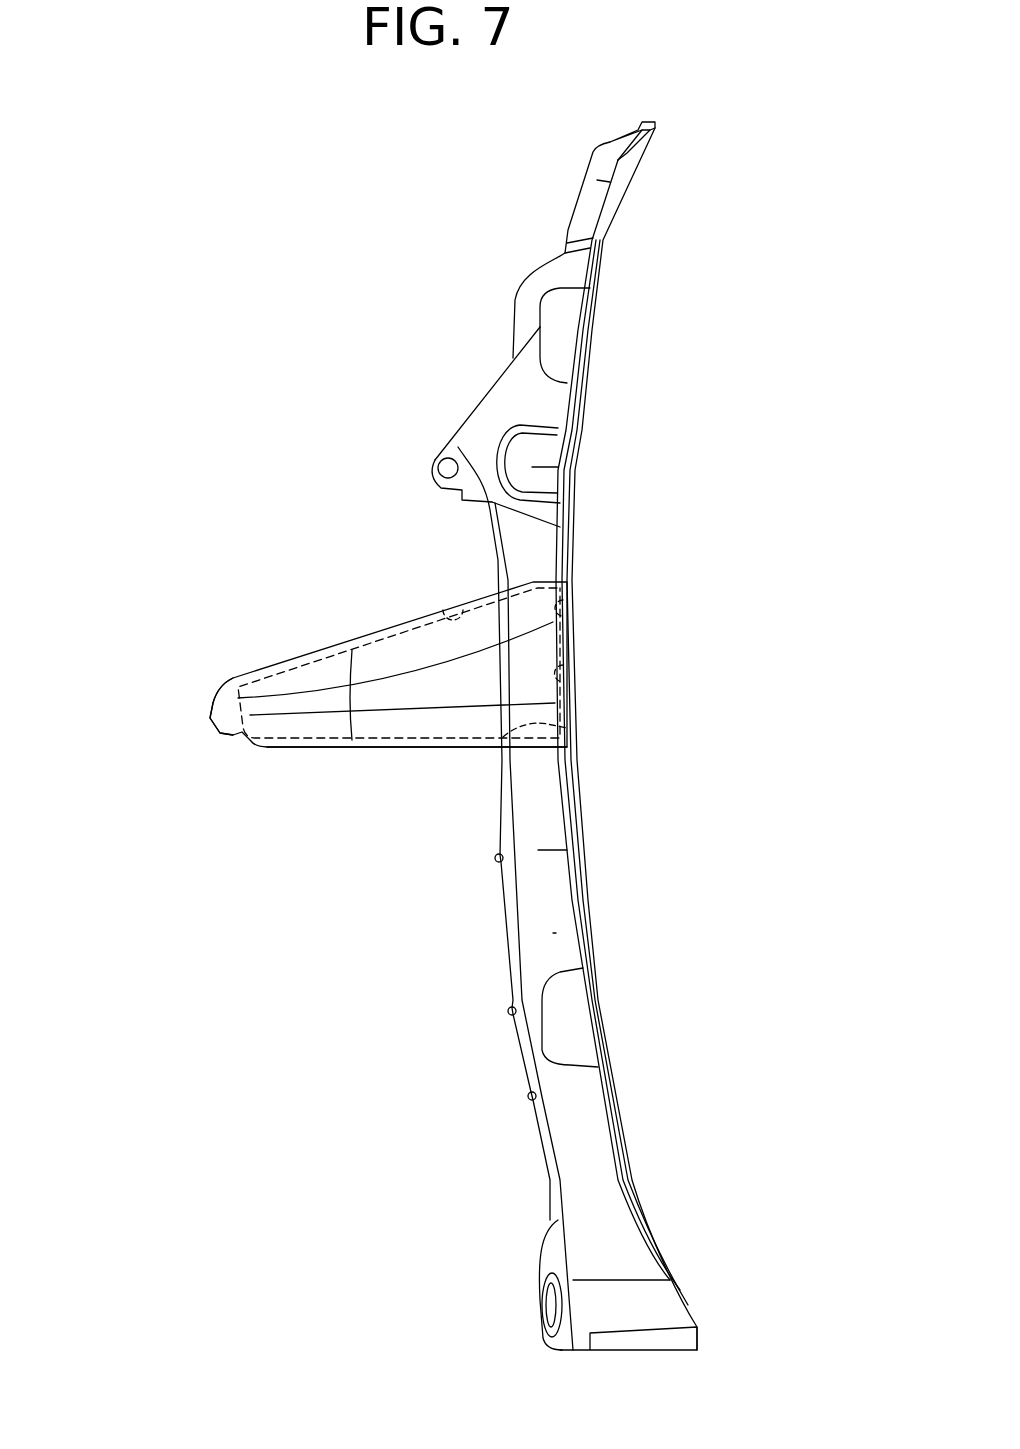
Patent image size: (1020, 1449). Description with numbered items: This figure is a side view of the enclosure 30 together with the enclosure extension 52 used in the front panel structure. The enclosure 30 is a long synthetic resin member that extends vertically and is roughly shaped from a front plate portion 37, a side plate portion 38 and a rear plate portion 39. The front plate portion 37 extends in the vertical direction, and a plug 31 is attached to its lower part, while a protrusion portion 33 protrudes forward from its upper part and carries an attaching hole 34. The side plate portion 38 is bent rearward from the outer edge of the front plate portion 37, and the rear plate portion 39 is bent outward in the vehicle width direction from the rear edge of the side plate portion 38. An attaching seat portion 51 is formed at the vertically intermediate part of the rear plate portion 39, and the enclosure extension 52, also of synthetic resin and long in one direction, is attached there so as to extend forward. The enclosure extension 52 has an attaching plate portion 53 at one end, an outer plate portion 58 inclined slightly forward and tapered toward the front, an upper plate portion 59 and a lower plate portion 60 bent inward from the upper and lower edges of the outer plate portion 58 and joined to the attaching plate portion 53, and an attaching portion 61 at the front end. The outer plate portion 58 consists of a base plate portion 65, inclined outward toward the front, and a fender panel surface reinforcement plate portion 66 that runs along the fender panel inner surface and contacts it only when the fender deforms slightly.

The enclosure 30 is at (585, 408).
The plug 31 is at (545, 1303).
The protrusion portion 33 is at (440, 455).
The attaching hole 34 is at (438, 468).
The front plate portion 37 is at (503, 953).
The side plate portion 38 is at (553, 933).
The rear plate portion 39 is at (607, 1030).
The attaching seat portion 51 is at (565, 676).
The enclosure extension 52 is at (280, 667).
The attaching plate portion 53 is at (563, 604).
The outer plate portion 58 is at (400, 745).
The upper plate portion 59 is at (440, 610).
The lower plate portion 60 is at (567, 728).
The attaching portion 61 is at (212, 712).
The base plate portion 65 is at (443, 677).
The fender panel surface reinforcement plate portion 66 is at (300, 705).